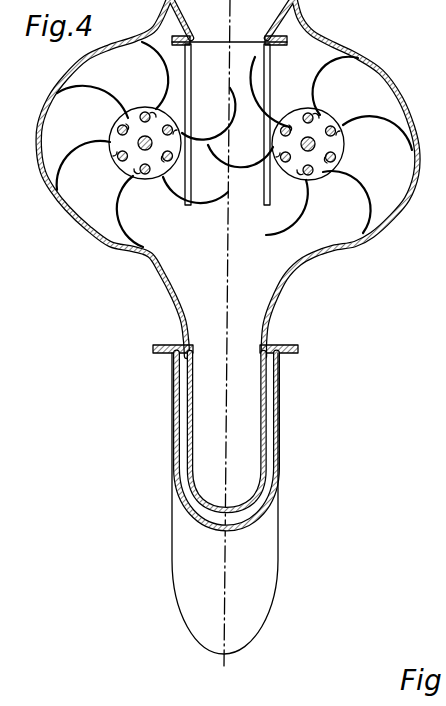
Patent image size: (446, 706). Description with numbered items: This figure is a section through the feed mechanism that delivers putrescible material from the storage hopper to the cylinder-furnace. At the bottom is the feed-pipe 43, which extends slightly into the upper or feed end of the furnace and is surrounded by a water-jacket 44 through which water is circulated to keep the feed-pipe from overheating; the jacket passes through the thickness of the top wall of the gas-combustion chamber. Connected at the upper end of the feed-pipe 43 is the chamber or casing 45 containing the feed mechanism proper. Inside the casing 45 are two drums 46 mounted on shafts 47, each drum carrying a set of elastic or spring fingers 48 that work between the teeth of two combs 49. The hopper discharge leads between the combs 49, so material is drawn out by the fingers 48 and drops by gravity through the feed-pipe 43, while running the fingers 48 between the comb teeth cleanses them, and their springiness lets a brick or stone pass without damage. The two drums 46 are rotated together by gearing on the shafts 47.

The feed-pipe 43 is at (227, 431).
The water-jacket 44 is at (280, 458).
The chamber 45 is at (237, 178).
The drums 46 is at (117, 128).
The shafts 47 is at (140, 152).
The spring fingers 48 is at (234, 144).
The combs 49 is at (185, 205).